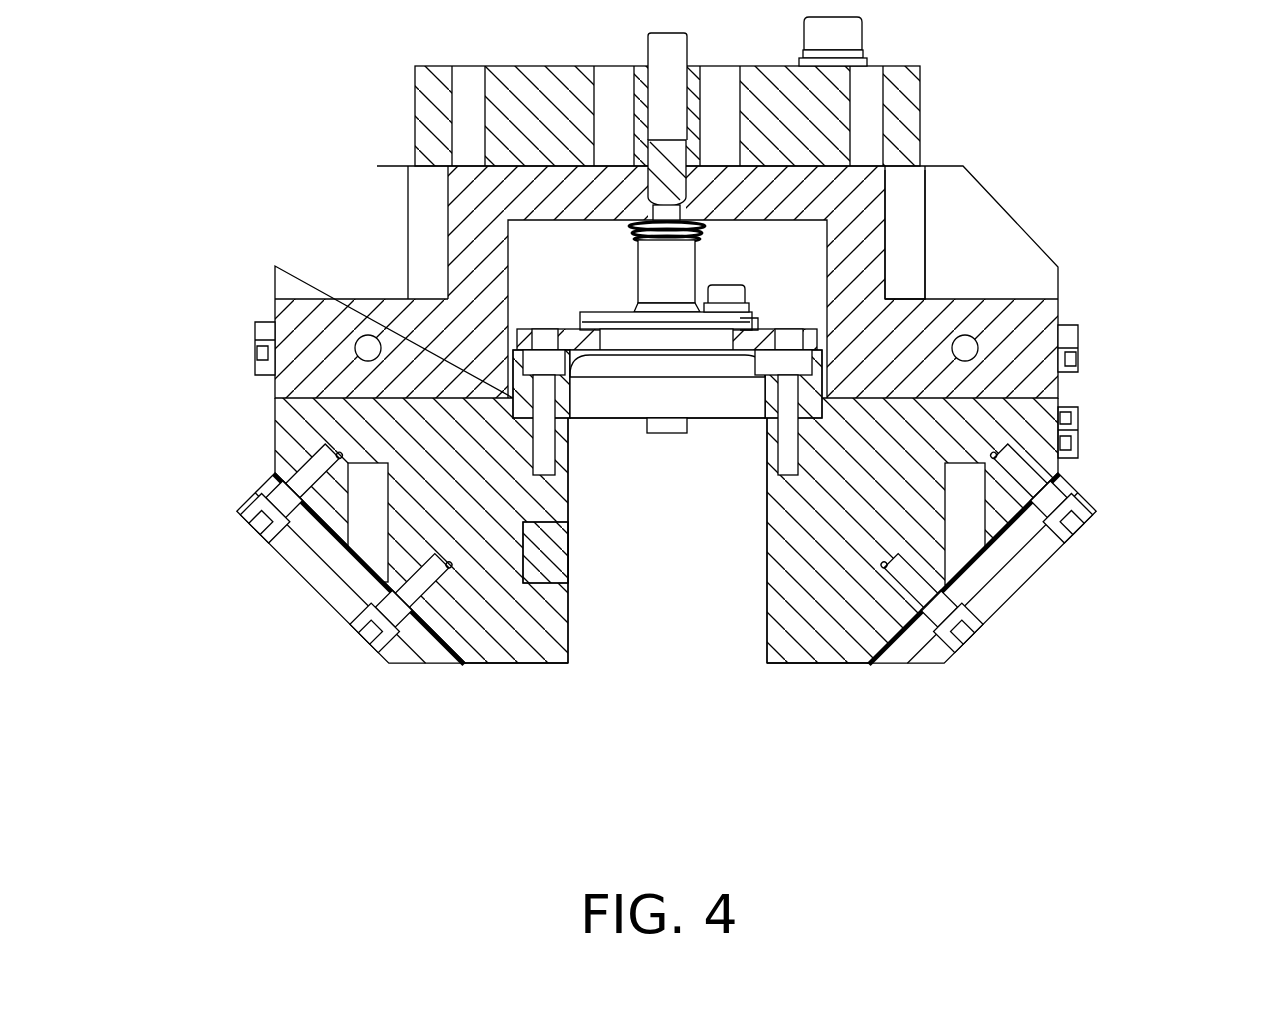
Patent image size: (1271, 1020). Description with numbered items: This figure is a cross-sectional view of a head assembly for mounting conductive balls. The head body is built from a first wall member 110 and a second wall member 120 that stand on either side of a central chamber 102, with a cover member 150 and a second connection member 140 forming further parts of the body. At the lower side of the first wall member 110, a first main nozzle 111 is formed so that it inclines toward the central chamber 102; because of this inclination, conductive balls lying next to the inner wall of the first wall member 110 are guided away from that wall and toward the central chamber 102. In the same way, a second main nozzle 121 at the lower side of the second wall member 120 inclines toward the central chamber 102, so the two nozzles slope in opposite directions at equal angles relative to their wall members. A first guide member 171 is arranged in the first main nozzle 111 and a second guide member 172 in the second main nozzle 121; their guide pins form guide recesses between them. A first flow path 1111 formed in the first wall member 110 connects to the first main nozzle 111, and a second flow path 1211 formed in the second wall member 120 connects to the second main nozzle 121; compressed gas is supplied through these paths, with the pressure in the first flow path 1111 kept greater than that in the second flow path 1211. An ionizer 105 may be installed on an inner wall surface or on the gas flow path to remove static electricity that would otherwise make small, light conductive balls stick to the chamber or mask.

The first wall member 110 is at (238, 433).
The second wall member 120 is at (1097, 468).
The cover member 150 is at (917, 197).
The first flow path 1111 is at (365, 510).
The second flow path 1211 is at (975, 508).
The first guide member 171 is at (352, 567).
The second guide member 172 is at (975, 573).
The first main nozzle 111 is at (440, 640).
The second main nozzle 121 is at (893, 632).
The ionizer 105 is at (543, 575).
The second connection member 140 is at (630, 637).
The central chamber 102 is at (708, 572).